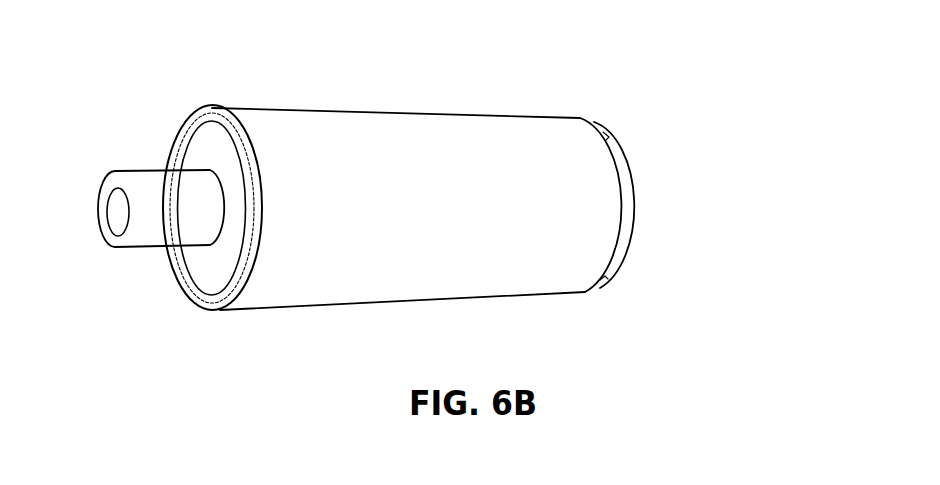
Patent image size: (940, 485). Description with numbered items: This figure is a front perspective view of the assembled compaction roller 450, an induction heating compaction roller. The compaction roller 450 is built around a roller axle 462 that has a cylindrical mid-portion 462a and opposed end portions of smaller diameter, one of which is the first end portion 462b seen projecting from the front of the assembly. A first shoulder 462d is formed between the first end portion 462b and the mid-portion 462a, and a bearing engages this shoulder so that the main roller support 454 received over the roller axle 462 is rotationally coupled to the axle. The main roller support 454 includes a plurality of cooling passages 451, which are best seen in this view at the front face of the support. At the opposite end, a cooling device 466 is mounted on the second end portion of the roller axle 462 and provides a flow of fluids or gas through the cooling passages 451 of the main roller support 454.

The compaction roller 450 is at (797, 101).
The cooling passages 451 is at (230, 128).
The main roller support 454 is at (462, 158).
The cooling device 466 is at (637, 150).
The roller axle 462 is at (86, 153).
The cylindrical mid-portion 462a is at (205, 255).
The first end portion 462b is at (152, 183).
The first shoulder 462d is at (173, 277).